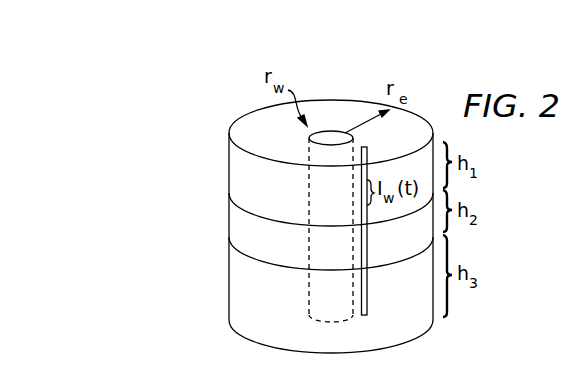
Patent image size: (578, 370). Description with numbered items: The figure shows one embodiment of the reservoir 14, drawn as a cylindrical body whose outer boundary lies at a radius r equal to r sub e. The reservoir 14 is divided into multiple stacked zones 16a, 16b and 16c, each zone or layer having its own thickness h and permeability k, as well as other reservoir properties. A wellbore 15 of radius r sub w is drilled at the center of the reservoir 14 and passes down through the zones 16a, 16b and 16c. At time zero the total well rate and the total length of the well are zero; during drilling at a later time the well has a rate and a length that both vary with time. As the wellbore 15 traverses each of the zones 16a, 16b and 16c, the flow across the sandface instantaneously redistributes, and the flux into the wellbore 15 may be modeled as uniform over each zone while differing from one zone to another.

The reservoir 14 is at (223, 114).
The wellbore 15 is at (331, 131).
The first zone 16a is at (235, 175).
The second zone 16b is at (235, 218).
The third zone 16c is at (235, 287).